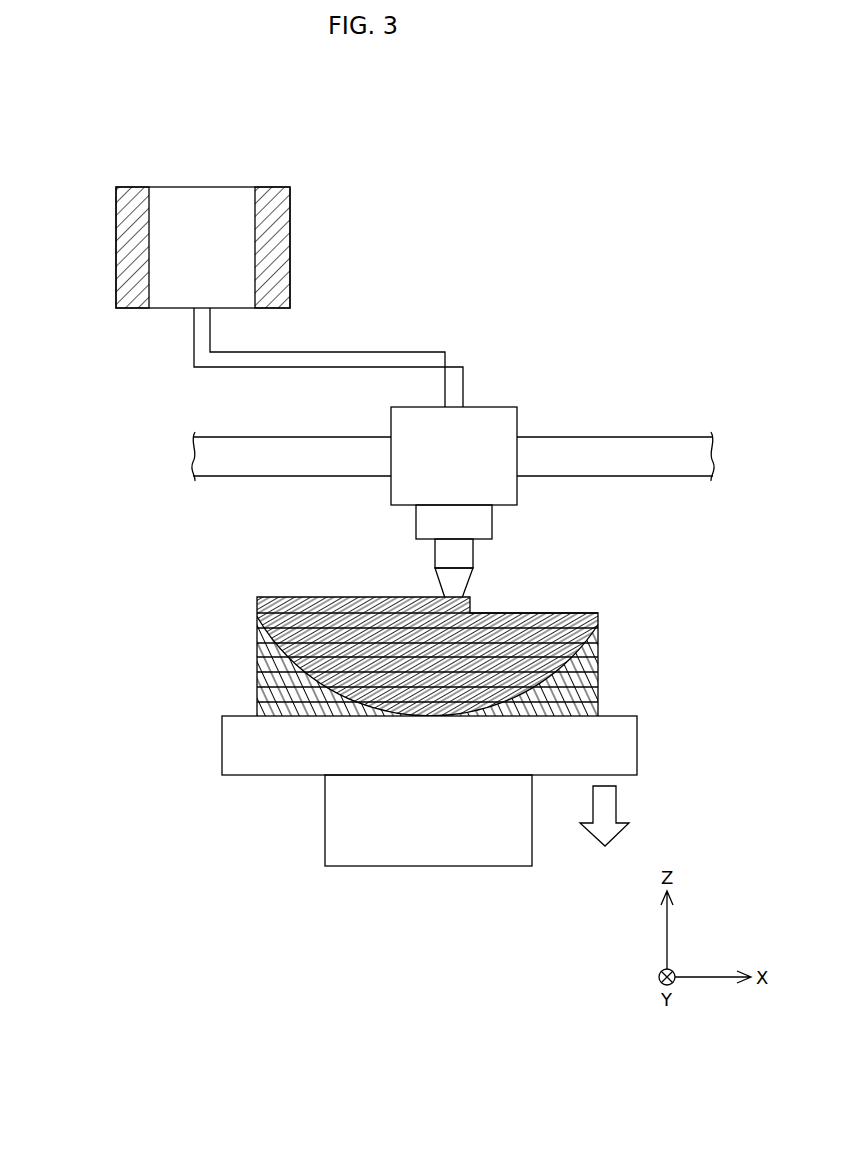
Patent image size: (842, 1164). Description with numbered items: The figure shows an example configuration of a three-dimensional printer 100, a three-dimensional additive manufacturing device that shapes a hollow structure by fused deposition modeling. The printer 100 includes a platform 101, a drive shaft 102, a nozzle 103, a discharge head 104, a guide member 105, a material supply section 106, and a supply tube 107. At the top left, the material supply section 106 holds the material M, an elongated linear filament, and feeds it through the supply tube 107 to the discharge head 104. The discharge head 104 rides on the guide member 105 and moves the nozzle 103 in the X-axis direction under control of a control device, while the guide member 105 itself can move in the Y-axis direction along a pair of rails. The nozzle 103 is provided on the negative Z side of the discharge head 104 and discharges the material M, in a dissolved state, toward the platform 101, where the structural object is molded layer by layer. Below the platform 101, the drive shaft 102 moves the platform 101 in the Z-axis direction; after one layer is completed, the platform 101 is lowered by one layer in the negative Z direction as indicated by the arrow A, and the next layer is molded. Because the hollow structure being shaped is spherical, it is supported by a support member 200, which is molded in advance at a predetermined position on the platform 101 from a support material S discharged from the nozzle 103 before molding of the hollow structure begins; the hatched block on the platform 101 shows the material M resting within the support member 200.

The 3D printer 100 is at (193, 120).
The platform 101 is at (637, 745).
The drive shaft 102 is at (325, 823).
The nozzle 103 is at (472, 590).
The discharge head 104 is at (505, 407).
The guide member 105 is at (652, 437).
The material supply section 106 is at (116, 248).
The supply tube 107 is at (353, 352).
The support member 200 is at (257, 658).
The material M is at (352, 597).
The support material S is at (598, 680).
The arrow A is at (616, 805).